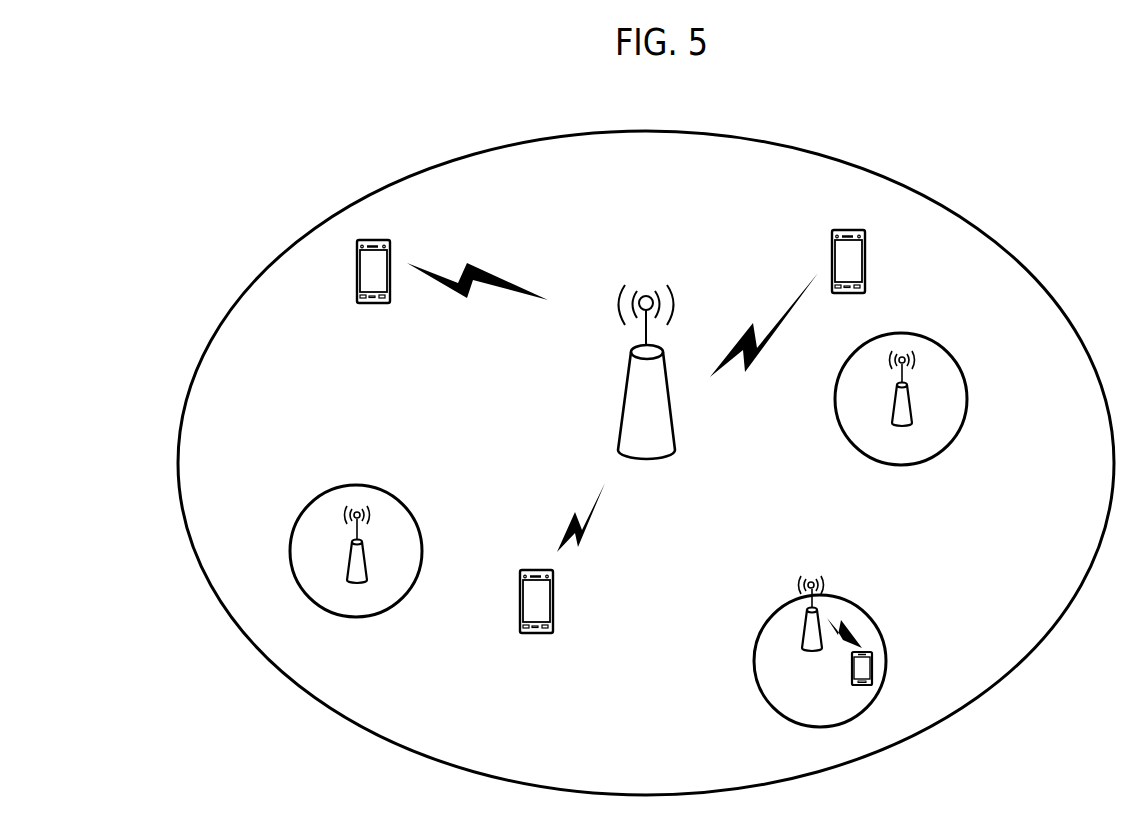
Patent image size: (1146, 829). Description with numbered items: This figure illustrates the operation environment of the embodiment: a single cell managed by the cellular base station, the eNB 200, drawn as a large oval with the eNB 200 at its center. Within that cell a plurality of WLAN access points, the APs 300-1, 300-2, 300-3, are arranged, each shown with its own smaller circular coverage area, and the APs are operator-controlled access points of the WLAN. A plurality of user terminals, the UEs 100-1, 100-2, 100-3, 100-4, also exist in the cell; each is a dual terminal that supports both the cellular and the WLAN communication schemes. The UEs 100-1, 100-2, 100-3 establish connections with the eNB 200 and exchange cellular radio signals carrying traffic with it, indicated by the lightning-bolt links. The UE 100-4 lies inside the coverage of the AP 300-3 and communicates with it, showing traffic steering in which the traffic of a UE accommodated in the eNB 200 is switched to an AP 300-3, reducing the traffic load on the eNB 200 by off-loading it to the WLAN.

The UE 100-1 is at (390, 257).
The UE 100-2 is at (553, 597).
The UE 100-3 is at (865, 270).
The UE 100-4 is at (872, 668).
The eNB 200 is at (625, 388).
The AP 300-1 is at (367, 560).
The AP 300-2 is at (912, 400).
The AP 300-3 is at (800, 635).